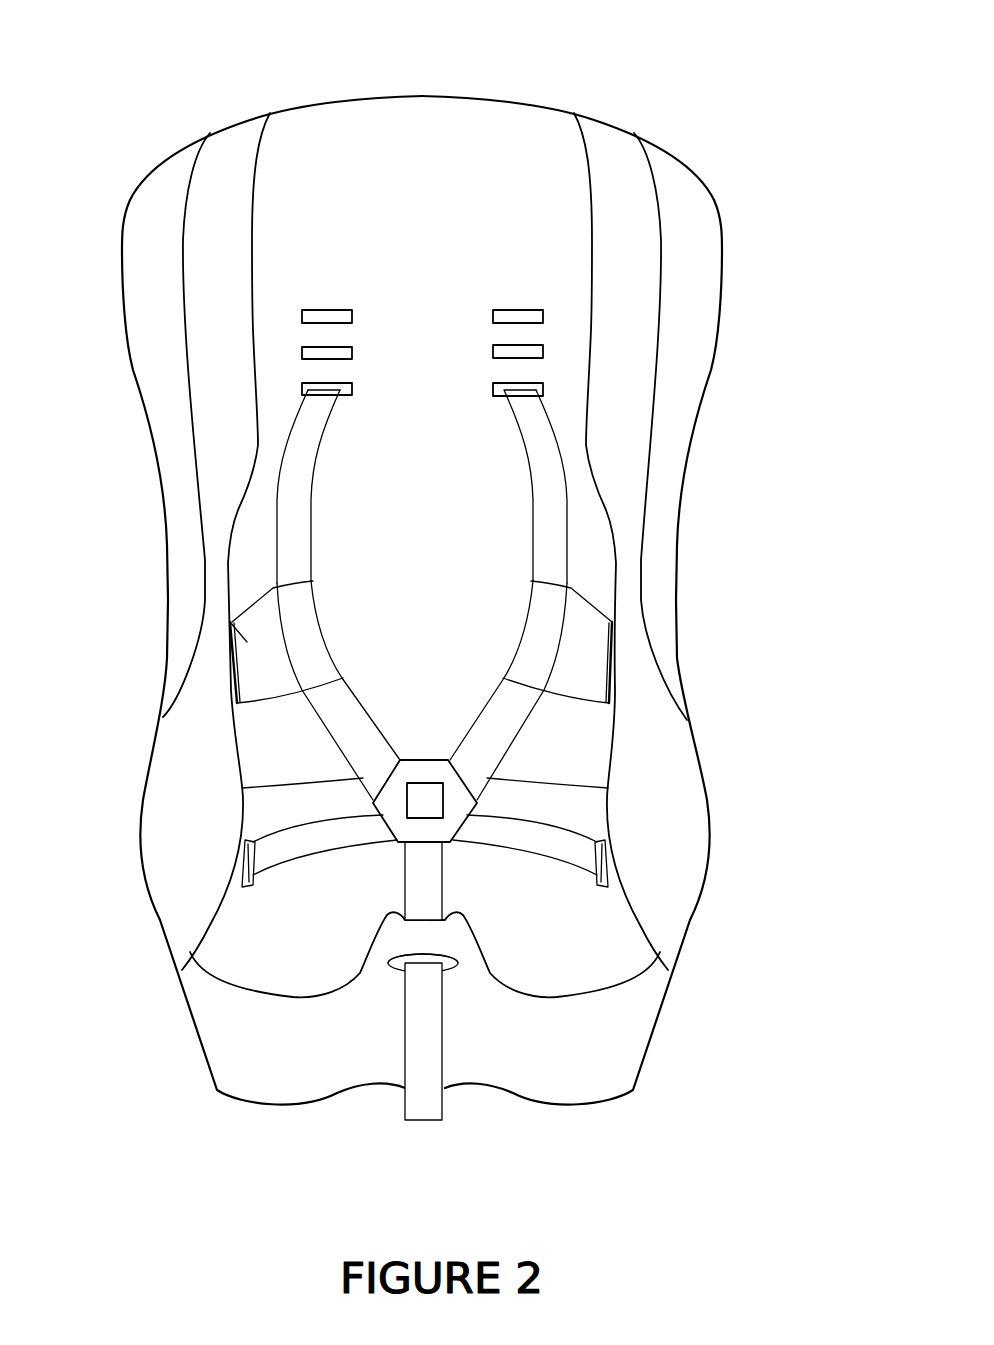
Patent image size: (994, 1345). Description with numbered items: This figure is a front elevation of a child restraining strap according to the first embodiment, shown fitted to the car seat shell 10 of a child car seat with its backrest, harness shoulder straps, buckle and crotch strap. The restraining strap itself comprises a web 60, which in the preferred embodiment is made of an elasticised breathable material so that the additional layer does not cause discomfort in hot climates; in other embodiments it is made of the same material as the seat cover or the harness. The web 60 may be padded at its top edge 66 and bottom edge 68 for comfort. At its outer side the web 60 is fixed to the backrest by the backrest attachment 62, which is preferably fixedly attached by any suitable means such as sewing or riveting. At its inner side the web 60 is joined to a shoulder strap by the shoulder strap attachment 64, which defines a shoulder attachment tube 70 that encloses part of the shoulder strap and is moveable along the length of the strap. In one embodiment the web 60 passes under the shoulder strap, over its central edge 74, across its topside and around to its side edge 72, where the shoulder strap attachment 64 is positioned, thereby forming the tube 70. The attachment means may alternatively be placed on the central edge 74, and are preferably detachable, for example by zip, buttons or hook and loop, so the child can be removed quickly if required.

The car seat shell 10 is at (645, 117).
The web 60 is at (230, 622).
The backrest attachment 62 is at (231, 667).
The shoulder strap attachment 64 is at (285, 630).
The top edge of the web 66 is at (243, 611).
The bottom edge of the web 68 is at (268, 702).
The shoulder attachment tube 70 is at (315, 640).
The side edge of the shoulder strap 72 is at (293, 425).
The central edge of the shoulder strap 74 is at (332, 422).